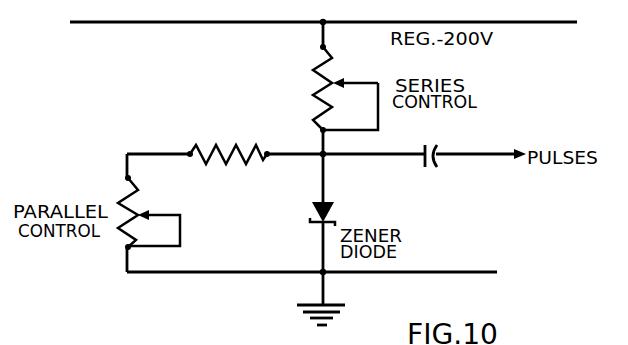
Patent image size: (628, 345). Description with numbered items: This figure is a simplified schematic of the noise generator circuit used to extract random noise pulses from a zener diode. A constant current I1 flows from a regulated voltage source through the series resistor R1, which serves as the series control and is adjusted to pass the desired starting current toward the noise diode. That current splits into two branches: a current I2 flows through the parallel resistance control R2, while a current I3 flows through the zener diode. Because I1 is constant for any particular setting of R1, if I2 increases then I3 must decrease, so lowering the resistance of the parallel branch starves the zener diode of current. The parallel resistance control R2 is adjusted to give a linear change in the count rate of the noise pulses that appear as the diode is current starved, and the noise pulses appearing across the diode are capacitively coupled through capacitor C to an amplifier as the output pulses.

The series resistor R1 is at (345, 88).
The parallel resistance control R2 is at (149, 212).
The coupling capacitor C is at (434, 147).
The series current I1 is at (302, 78).
The parallel branch current I2 is at (243, 137).
The zener diode current I3 is at (333, 167).